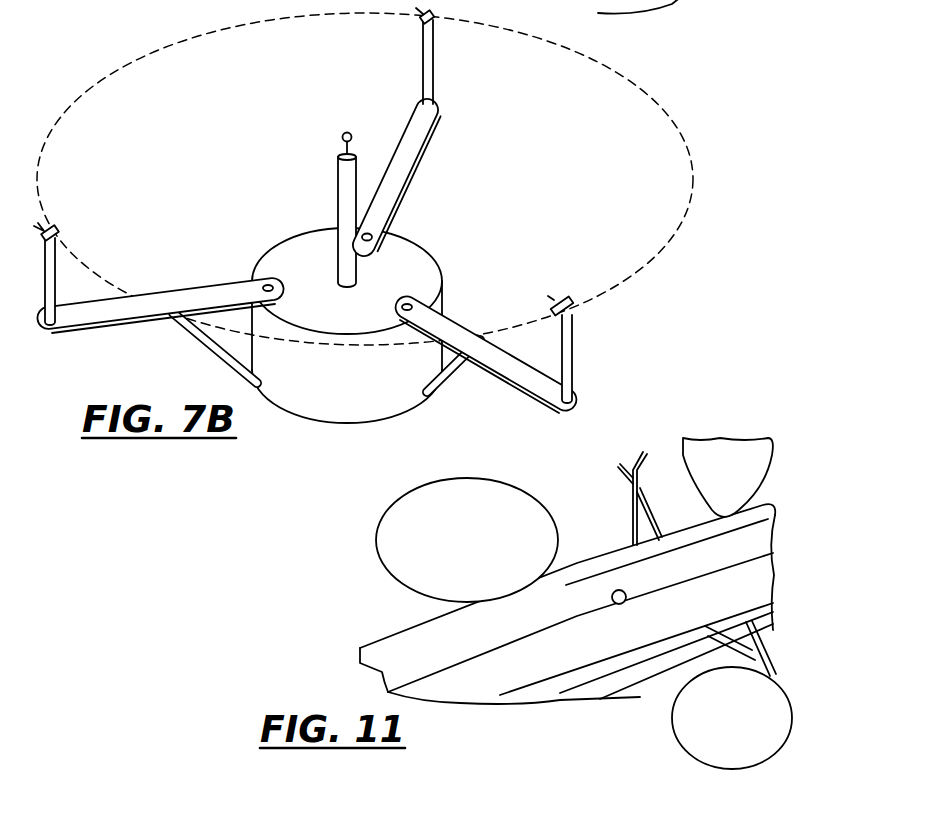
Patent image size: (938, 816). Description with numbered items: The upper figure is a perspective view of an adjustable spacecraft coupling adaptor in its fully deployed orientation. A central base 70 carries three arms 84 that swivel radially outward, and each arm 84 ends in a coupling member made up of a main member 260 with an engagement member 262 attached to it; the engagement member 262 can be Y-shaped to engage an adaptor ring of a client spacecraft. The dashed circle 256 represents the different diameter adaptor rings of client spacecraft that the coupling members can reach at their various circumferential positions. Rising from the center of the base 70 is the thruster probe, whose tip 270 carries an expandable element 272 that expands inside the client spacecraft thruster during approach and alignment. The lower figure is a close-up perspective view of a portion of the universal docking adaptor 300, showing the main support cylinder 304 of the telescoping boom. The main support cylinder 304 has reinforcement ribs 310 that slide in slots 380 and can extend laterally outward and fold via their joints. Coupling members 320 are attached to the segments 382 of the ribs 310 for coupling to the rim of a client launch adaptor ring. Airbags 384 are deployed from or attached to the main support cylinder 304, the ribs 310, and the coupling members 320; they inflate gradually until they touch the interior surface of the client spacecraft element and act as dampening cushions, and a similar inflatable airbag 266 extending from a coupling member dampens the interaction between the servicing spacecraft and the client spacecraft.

In FIG. 7B, the base hub 70 is at (441, 248).
In FIG. 7B, the arms 84 is at (424, 150).
In FIG. 7B, the dashed circles 256 is at (688, 143).
In FIG. 7B, the main member 260 is at (433, 77).
In FIG. 7B, the engagement member 262 is at (426, 16).
In FIG. 7B, the tip 270 is at (338, 187).
In FIG. 7B, the expandable element 272 is at (344, 130).
In FIG. 11, the inflatable airbags 266 is at (675, 743).
In FIG. 11, the universal docking adaptor 300 is at (377, 638).
In FIG. 11, the main support cylinder 304 is at (403, 657).
In FIG. 11, the reinforcement ribs 310 is at (507, 643).
In FIG. 11, the coupling members 320 is at (631, 510).
In FIG. 11, the slots 380 is at (770, 607).
In FIG. 11, the segments 382 is at (645, 587).
In FIG. 11, the airbags 384 is at (486, 480).